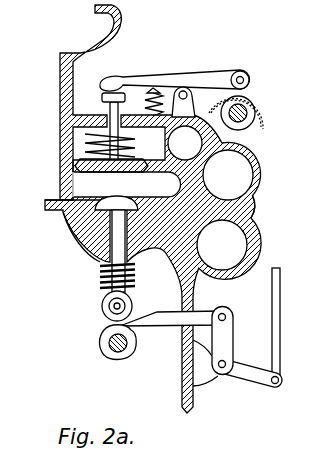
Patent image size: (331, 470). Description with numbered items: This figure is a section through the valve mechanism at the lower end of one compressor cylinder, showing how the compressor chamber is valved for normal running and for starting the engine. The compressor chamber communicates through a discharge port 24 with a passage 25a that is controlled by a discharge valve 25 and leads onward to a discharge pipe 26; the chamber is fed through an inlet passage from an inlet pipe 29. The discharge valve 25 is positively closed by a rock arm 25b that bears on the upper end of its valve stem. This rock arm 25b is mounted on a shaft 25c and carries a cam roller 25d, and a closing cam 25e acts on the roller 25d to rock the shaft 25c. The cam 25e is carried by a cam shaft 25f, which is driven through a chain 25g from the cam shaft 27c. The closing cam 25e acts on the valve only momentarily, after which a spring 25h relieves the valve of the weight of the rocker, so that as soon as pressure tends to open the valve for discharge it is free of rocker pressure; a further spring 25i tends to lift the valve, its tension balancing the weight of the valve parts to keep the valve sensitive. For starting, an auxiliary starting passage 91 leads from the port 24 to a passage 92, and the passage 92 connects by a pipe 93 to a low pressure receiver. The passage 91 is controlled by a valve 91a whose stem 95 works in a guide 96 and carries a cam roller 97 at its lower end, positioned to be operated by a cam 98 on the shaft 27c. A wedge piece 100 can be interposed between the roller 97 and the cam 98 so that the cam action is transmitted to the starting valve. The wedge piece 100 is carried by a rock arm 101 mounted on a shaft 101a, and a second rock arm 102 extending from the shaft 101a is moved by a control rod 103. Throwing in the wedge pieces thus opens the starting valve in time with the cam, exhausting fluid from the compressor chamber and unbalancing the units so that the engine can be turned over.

The discharge port 24 is at (87, 181).
The discharge valve 25 is at (88, 168).
The passage 25a is at (109, 97).
The rock arm 25b is at (218, 73).
The shaft 25c is at (183, 90).
The cam roller 25d is at (248, 78).
The cam 25e is at (246, 100).
The cam shaft 25f is at (249, 113).
The chain 25g is at (262, 131).
The spring 25h is at (153, 90).
The spring 25i is at (103, 150).
The discharge pipe 26 is at (163, 170).
The cam shaft 27c is at (115, 353).
The inlet pipe 29 is at (240, 247).
The auxiliary starting passage 91 is at (70, 212).
The valve 91a is at (82, 238).
The passage 92 is at (198, 207).
The pipe 93 is at (247, 168).
The stem 95 is at (121, 236).
The guide 96 is at (100, 263).
The cam roller 97 is at (102, 307).
The cam 98 is at (100, 336).
The wedge piece 100 is at (176, 318).
The rock arm 101 is at (229, 334).
The shaft 101a is at (223, 368).
The rock arm 102 is at (256, 376).
The control rod 103 is at (280, 298).